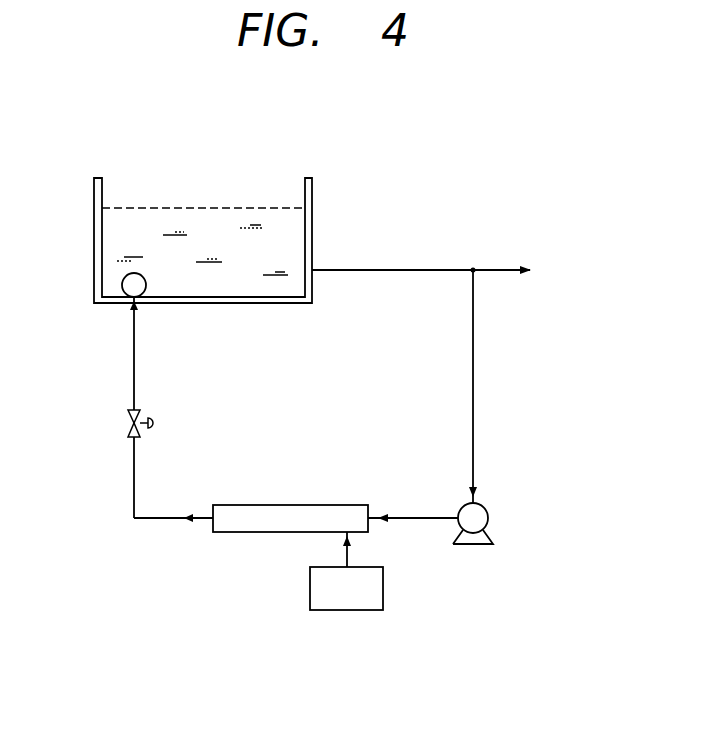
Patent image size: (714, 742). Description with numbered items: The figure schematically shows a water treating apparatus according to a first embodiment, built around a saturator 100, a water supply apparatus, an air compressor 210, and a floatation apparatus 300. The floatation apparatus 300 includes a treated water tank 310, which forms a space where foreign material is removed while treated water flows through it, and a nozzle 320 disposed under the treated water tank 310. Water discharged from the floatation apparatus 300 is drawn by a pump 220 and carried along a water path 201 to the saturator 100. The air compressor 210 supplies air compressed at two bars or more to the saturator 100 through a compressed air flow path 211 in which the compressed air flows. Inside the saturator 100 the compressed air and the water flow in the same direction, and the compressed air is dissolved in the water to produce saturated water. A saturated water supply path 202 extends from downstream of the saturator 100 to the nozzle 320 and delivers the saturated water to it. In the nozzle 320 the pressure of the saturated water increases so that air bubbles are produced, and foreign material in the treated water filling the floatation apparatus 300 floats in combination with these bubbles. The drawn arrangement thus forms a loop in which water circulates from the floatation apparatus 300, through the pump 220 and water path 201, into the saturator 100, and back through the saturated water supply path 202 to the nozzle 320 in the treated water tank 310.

The saturator 100 is at (287, 500).
The water path 201 is at (420, 517).
The saturated water supply path 202 is at (153, 520).
The air compressor 210 is at (383, 583).
The compressed air flow path 211 is at (345, 553).
The pump 220 is at (488, 508).
The floatation apparatus 300 is at (258, 182).
The treated water tank 310 is at (313, 193).
The nozzle 320 is at (115, 307).